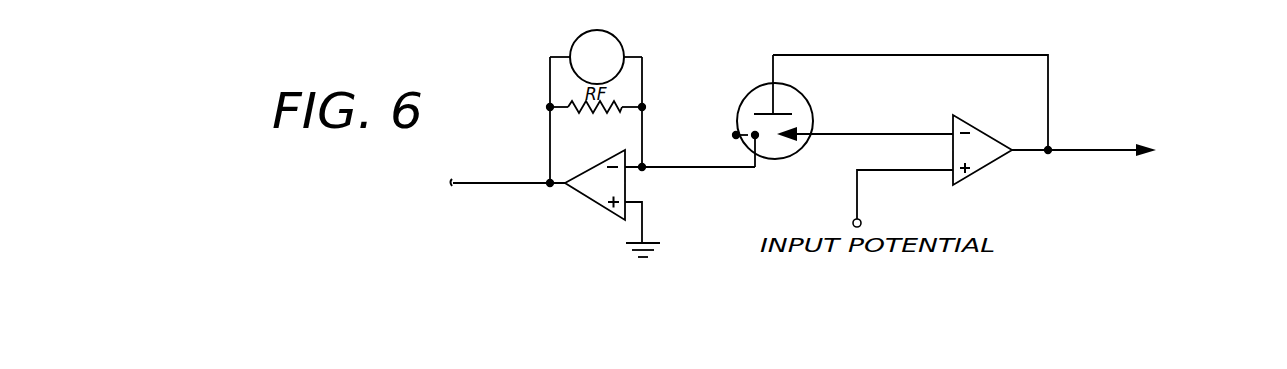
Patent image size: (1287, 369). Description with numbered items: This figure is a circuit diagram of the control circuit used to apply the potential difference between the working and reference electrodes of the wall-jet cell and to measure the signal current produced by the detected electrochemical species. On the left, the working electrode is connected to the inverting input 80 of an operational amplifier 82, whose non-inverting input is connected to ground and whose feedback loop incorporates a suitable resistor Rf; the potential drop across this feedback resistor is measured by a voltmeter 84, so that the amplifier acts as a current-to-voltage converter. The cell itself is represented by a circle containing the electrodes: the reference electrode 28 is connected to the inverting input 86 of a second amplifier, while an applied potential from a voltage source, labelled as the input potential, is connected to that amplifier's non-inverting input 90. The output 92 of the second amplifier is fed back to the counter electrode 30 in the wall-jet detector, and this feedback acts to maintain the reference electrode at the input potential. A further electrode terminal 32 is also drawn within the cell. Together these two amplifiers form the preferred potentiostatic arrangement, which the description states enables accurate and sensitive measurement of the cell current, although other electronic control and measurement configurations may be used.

The reference electrode 28 is at (792, 148).
The counter electrode 30 is at (784, 103).
The electrode terminal 32 is at (733, 134).
The inverting input 80 is at (654, 176).
The operational amplifier 82 is at (578, 208).
The voltmeter 84 is at (618, 40).
The inverting input 86 is at (951, 132).
The non-inverting input 90 is at (953, 168).
The output 92 is at (1140, 147).